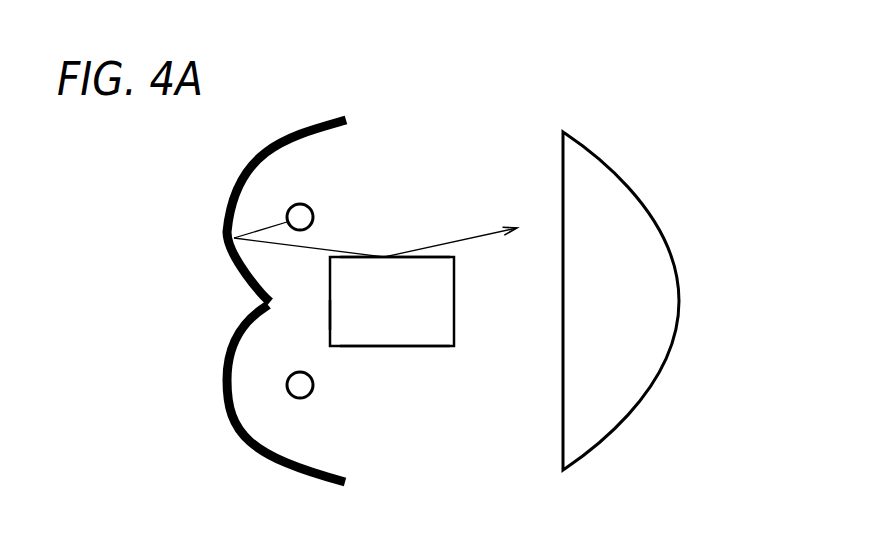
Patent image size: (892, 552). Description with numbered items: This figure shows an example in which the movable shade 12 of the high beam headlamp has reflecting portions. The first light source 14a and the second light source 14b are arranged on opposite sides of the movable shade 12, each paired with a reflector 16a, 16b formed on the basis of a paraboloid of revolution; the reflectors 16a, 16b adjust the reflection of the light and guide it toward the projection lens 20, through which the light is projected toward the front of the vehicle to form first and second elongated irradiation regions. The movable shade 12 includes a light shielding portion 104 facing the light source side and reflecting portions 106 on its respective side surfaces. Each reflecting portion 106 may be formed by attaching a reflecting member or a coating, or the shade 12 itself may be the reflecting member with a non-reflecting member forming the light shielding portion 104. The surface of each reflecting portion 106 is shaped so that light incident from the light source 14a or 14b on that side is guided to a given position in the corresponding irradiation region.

The movable shade 12 is at (438, 327).
The first light source 14a is at (300, 217).
The second light source 14b is at (300, 385).
The reflector 16a is at (314, 138).
The reflector 16b is at (312, 465).
The projection lens 20 is at (650, 359).
The light shielding portion 104 is at (328, 317).
The reflecting portion 106 is at (440, 257).